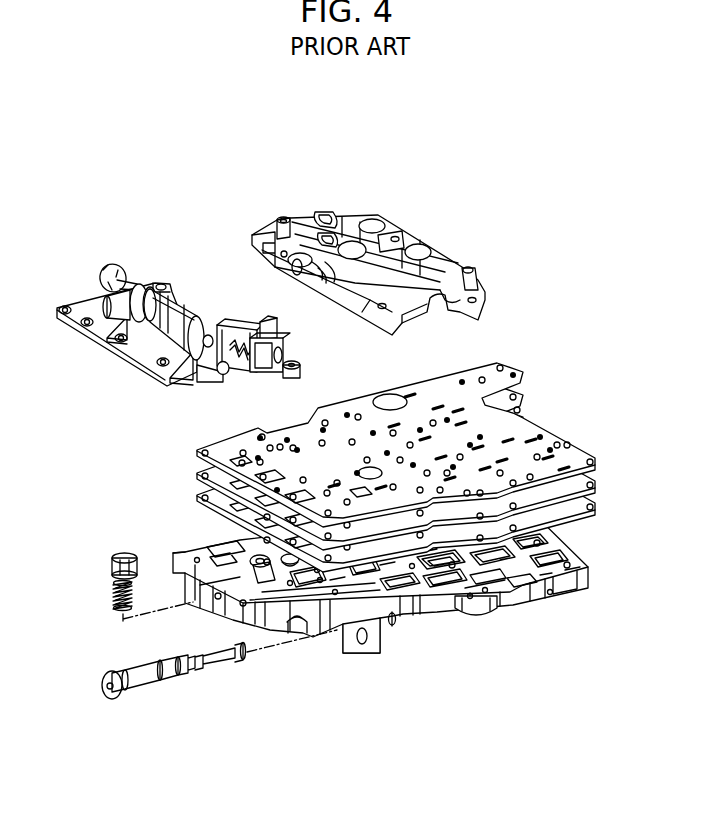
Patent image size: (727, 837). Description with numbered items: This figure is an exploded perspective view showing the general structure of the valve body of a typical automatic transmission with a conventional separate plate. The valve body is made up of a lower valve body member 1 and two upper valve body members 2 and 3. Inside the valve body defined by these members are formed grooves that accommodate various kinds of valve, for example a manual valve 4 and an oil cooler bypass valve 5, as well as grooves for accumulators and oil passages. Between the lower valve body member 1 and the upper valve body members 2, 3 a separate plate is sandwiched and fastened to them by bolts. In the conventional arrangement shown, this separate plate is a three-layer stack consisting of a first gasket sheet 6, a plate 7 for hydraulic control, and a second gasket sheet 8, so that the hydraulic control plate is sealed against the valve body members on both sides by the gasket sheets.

The lower valve body member 1 is at (512, 616).
The upper valve body member 2 is at (147, 268).
The upper valve body member 3 is at (380, 212).
The manual valve 4 is at (153, 687).
The oil cooler bypass valve 5 is at (103, 578).
The first gasket sheet 6 is at (572, 443).
The plate for hydraulic control 7 is at (597, 477).
The second gasket sheet 8 is at (595, 493).